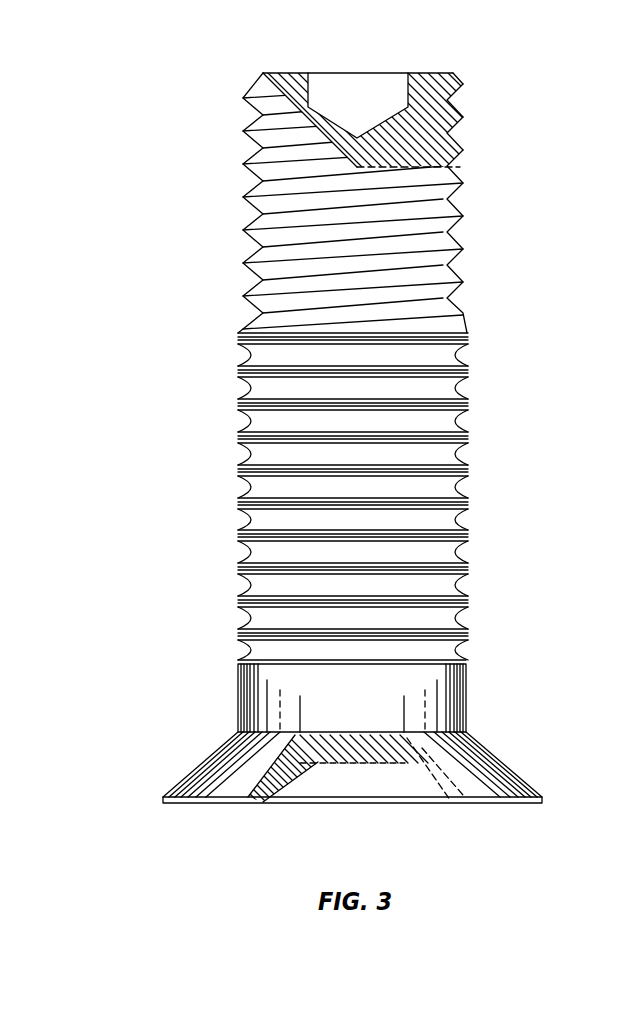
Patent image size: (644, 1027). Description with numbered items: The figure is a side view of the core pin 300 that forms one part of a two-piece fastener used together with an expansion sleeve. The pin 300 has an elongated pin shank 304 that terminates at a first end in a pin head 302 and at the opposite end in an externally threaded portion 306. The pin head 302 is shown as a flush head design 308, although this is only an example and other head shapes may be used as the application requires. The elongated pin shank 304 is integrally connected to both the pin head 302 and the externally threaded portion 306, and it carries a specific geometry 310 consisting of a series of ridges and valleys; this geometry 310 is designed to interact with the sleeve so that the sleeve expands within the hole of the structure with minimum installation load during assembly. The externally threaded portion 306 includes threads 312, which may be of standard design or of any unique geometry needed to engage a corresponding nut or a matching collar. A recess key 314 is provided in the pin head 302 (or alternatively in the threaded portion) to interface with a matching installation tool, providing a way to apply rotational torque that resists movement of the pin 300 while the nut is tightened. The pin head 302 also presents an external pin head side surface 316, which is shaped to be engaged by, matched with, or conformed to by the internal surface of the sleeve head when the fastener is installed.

The core pin 300 is at (162, 68).
The pin head 302 is at (480, 758).
The elongated pin shank 304 is at (375, 435).
The externally threaded portion 306 is at (375, 215).
The flush head design 308 is at (542, 800).
The specific geometry 310 is at (245, 462).
The threads 312 is at (453, 137).
The recess key 314 is at (362, 98).
The external pin head side surface 316 is at (522, 782).